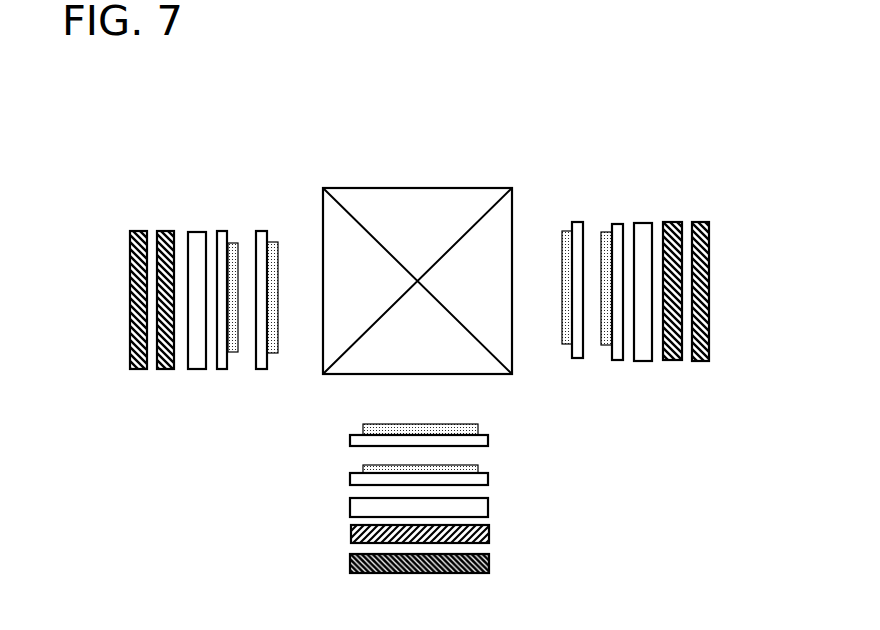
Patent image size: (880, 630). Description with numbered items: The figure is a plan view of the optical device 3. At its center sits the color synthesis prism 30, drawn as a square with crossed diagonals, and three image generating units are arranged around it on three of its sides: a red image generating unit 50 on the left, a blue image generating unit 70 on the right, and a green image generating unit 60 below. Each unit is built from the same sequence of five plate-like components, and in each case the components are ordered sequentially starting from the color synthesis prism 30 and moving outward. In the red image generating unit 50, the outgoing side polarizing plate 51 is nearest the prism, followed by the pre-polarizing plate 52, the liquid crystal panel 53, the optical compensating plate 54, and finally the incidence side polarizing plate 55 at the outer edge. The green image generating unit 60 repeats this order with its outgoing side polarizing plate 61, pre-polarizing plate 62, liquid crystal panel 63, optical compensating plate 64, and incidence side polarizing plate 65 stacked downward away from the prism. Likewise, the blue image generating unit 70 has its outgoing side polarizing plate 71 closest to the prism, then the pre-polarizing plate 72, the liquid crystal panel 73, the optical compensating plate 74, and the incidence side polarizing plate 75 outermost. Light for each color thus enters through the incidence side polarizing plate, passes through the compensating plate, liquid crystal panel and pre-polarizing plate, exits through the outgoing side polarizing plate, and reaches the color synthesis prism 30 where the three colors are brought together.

The optical device 3 is at (436, 88).
The color synthesis prism 30 is at (367, 197).
The red image generating unit 50 is at (188, 138).
The outgoing side polarizing plate 51 is at (261, 230).
The pre-polarizing plate 52 is at (220, 231).
The liquid crystal panel 53 is at (197, 358).
The optical compensating plate 54 is at (167, 230).
The incidence side polarizing plate 55 is at (133, 230).
The green image generating unit 60 is at (598, 524).
The outgoing side polarizing plate 61 is at (488, 443).
The pre-polarizing plate 62 is at (488, 480).
The liquid crystal panel 63 is at (359, 505).
The optical compensating plate 64 is at (489, 532).
The incidence side polarizing plate 65 is at (489, 563).
The blue image generating unit 70 is at (642, 117).
The outgoing side polarizing plate 71 is at (575, 222).
The pre-polarizing plate 72 is at (615, 224).
The liquid crystal panel 73 is at (646, 350).
The optical compensating plate 74 is at (667, 222).
The incidence side polarizing plate 75 is at (703, 222).